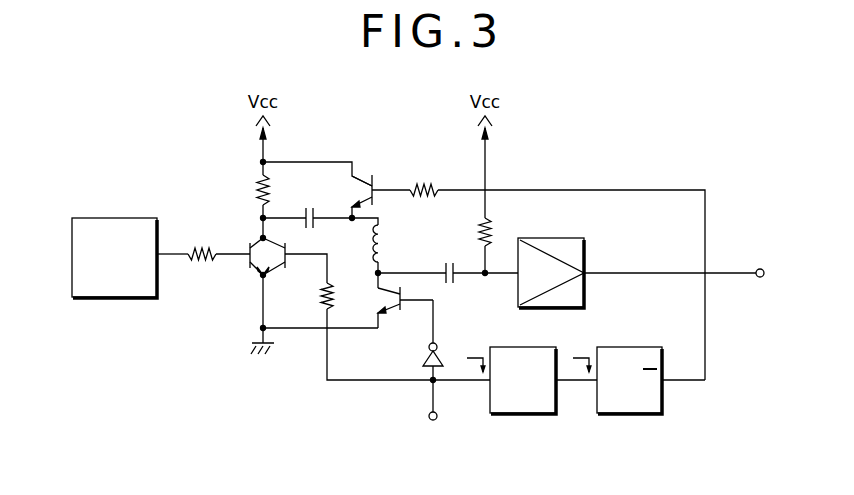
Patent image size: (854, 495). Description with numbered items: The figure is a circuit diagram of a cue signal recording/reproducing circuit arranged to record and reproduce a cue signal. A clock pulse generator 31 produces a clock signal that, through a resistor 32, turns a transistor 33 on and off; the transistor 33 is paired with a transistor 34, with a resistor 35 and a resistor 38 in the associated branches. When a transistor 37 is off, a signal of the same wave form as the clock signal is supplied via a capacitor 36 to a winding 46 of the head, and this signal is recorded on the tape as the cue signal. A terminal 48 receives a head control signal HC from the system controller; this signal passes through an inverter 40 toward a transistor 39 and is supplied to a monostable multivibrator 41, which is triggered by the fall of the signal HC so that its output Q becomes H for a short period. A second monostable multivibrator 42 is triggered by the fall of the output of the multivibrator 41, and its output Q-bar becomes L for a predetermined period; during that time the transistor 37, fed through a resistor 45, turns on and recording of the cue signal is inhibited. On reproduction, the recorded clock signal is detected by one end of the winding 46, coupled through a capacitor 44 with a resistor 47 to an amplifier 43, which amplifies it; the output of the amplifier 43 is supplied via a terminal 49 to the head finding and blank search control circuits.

The clock pulse generator 31 is at (147, 216).
The resistor 32 is at (203, 248).
The transistor 33 is at (245, 272).
The transistor 34 is at (288, 272).
The resistor 35 is at (258, 197).
The capacitor 36 is at (310, 207).
The transistor 37 is at (376, 180).
The resistor 38 is at (335, 291).
The transistor 39 is at (406, 312).
The inverter 40 is at (441, 346).
The monostable multivibrator 41 is at (512, 415).
The monostable multivibrator 42 is at (640, 415).
The amplifier 43 is at (586, 240).
The capacitor 44 is at (455, 265).
The resistor 45 is at (437, 183).
The winding 46 is at (387, 257).
The resistor 47 is at (495, 240).
The terminal 48 is at (439, 418).
The terminal 49 is at (759, 268).